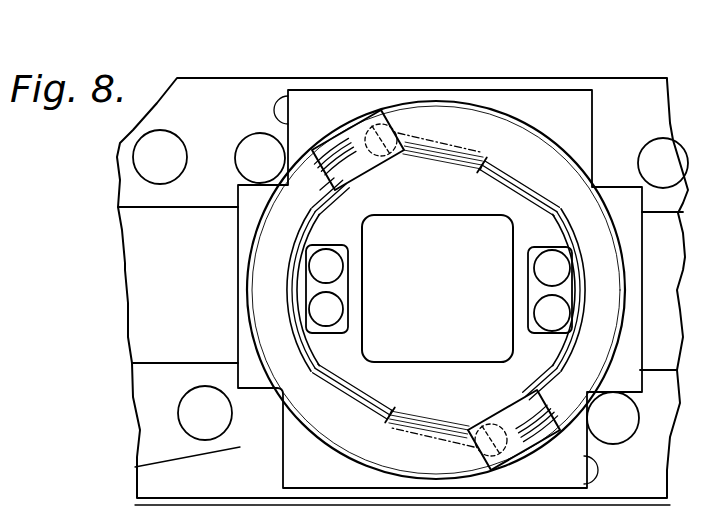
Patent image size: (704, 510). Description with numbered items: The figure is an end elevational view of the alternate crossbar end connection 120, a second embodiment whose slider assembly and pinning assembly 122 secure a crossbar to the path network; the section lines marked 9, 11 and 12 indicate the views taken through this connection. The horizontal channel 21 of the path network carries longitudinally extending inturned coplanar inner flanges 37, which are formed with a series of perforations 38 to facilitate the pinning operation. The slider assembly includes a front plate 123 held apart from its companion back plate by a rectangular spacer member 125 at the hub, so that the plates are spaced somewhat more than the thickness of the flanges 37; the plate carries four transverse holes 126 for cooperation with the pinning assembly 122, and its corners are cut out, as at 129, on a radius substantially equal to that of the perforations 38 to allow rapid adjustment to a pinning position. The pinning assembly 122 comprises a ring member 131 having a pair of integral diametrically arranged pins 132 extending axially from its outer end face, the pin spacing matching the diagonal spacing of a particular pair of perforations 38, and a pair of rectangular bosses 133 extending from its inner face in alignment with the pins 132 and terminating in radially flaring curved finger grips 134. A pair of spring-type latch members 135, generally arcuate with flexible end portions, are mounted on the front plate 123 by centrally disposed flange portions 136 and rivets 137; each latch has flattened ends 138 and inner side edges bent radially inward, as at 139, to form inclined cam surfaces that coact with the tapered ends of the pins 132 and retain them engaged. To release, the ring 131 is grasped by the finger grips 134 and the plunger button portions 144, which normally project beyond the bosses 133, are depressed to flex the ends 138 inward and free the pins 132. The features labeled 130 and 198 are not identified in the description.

The section line 9- 9 is at (258, 62).
The section line 11- 11 is at (312, 104).
The section line 12- 12 is at (220, 282).
The horizontal channel 21 is at (133, 345).
The inner flanges 37 is at (172, 208).
The perforations 38 is at (181, 174).
The alternate crossbar end connection 120 is at (136, 467).
The pinning assembly 122 is at (378, 112).
The front plate 123 is at (577, 467).
The spacer member 125 is at (455, 213).
The transverse holes 126 is at (405, 140).
The cut-out corners 129 is at (268, 122).
The band bend 130 is at (326, 183).
The ring member 131 is at (358, 457).
The pins 132 is at (418, 140).
The bosses 133 is at (406, 153).
The finger grips 134 is at (425, 465).
The latch members 135 is at (318, 221).
The flange portions 136 is at (330, 334).
The rivets 137 is at (314, 306).
The flattened ends 138 is at (320, 198).
The inwardly bent edge portions 139 is at (403, 167).
The button portion 144 is at (297, 118).
The band portion 198 is at (345, 383).